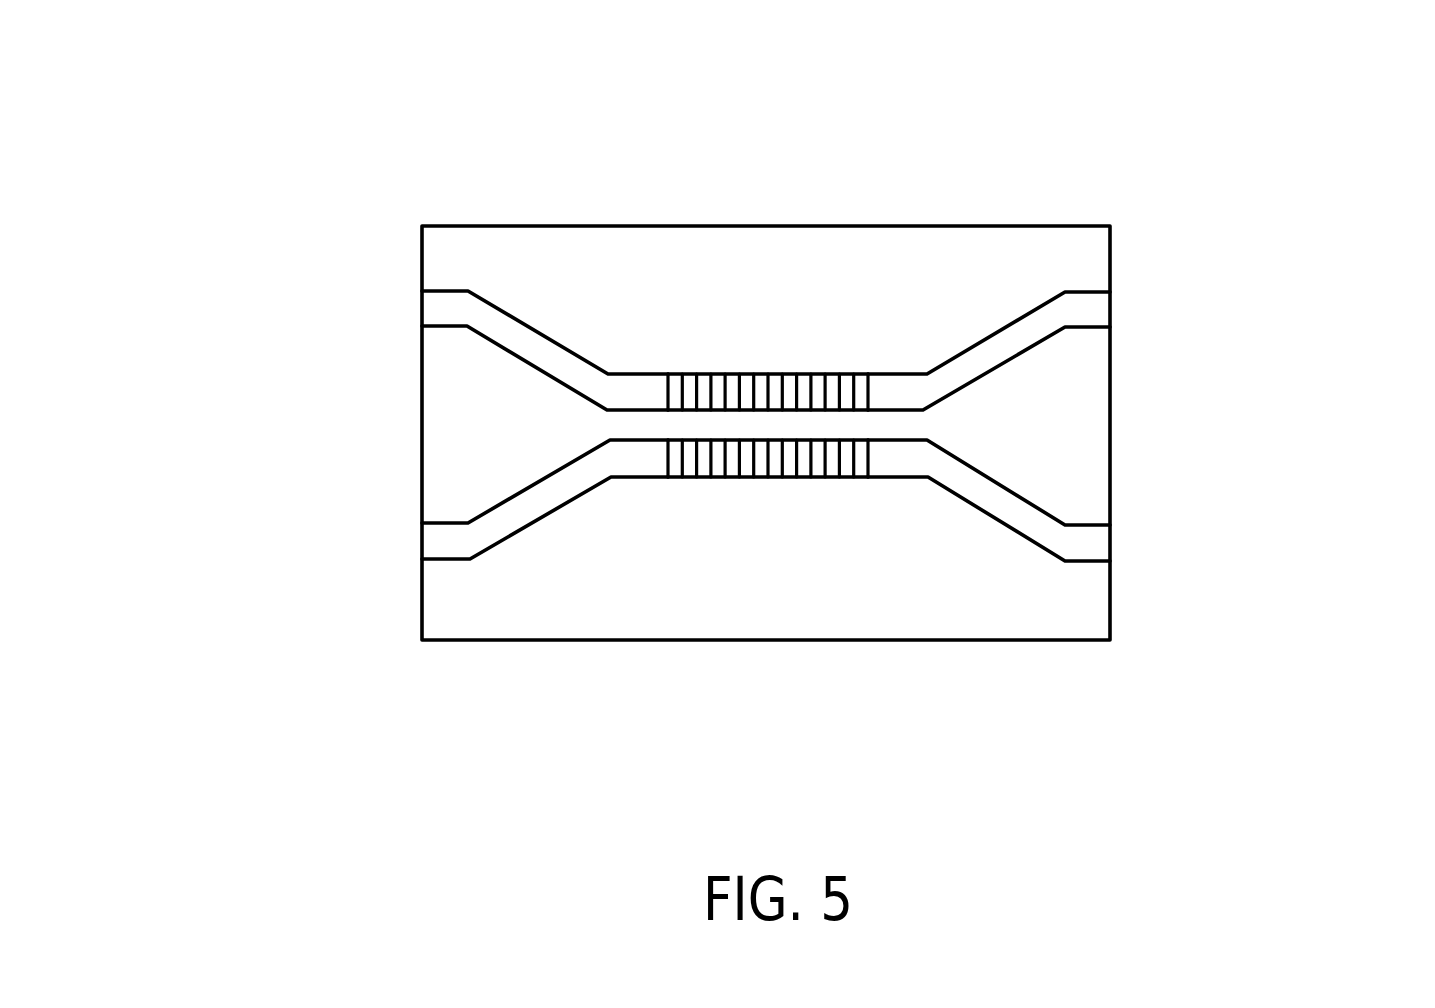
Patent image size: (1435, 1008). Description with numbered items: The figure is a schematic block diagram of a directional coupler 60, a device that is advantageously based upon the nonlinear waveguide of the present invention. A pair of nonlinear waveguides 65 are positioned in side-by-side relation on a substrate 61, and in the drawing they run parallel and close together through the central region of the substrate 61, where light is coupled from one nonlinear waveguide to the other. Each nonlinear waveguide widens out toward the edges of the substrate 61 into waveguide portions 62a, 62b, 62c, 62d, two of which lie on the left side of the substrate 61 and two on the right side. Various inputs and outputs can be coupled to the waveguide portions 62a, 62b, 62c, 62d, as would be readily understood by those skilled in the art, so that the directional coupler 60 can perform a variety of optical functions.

The directional coupler 60 is at (950, 165).
The substrate 61 is at (1045, 252).
The waveguide portion 62a is at (441, 311).
The waveguide portion 62b is at (440, 541).
The waveguide portion 62c is at (1092, 307).
The waveguide portion 62d is at (1083, 540).
The nonlinear waveguides 65 is at (707, 352).